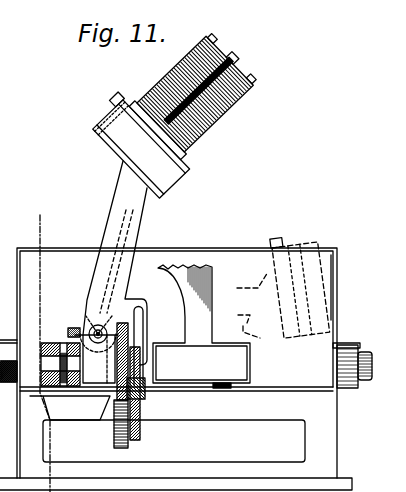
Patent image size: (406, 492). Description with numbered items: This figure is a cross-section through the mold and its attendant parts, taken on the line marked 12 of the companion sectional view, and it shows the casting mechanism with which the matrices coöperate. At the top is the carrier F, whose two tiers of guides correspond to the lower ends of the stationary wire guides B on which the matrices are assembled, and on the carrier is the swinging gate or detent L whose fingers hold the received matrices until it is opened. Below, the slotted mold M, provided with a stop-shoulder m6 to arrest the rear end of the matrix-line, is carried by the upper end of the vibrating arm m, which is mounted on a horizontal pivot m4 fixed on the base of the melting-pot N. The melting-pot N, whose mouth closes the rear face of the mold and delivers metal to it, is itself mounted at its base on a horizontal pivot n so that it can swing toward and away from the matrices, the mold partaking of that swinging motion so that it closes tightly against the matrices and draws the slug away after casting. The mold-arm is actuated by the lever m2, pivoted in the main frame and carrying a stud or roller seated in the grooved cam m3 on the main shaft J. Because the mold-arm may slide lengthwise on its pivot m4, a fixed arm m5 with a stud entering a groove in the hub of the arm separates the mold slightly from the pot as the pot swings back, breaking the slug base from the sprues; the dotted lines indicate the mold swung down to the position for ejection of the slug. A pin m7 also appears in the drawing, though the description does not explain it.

The stationary wire guides B is at (201, 87).
The carrier-gate L is at (238, 61).
The carrier F is at (128, 70).
The stop-shoulder m6 is at (117, 104).
The melting-pot N is at (9, 261).
The mold M is at (168, 178).
The vibrating arm m is at (132, 232).
The section line 12 is at (41, 347).
The pivot m4 is at (97, 327).
The fixed arm m5 is at (66, 333).
The pin m7 is at (139, 326).
The horizontal pivot n is at (251, 367).
The main shaft J is at (365, 382).
The grooved cam m3 is at (113, 436).
The lever m2 is at (138, 422).